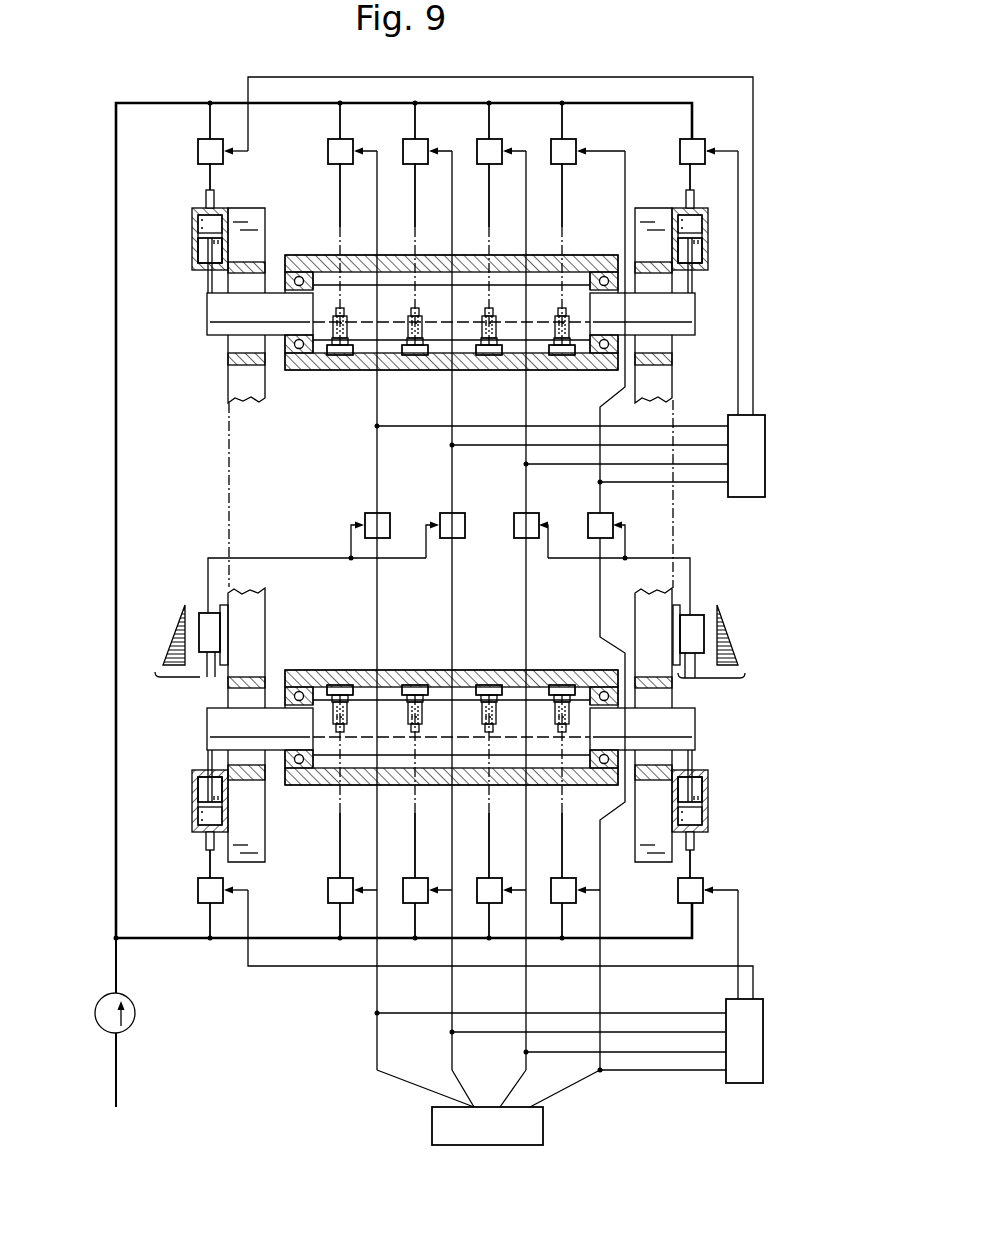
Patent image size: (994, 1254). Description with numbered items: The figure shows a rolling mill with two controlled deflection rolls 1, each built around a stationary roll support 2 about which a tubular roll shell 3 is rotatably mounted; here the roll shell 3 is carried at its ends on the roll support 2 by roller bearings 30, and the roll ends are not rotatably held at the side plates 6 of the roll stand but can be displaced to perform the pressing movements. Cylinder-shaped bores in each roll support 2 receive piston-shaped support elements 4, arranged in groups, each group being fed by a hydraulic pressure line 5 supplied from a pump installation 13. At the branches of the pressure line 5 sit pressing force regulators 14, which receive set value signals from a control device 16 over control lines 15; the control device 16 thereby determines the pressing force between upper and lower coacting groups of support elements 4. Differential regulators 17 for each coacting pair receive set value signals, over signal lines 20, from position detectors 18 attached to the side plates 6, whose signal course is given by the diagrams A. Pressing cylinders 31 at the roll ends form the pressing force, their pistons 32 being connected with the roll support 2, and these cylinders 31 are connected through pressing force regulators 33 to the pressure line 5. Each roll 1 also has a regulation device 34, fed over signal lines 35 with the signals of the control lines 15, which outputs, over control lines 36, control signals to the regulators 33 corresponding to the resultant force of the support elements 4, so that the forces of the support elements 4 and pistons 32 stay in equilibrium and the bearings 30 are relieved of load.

The controlled deflection roll 1 is at (496, 378).
The roll support 2 is at (538, 322).
The roll shell 3 is at (390, 368).
The support element 4 is at (340, 356).
The hydraulic pressure line 5 is at (604, 104).
The side plate 6 is at (250, 210).
The pump installation 13 is at (135, 1016).
The pressing force regulator 14 is at (328, 152).
The control line 15 is at (600, 993).
The control device 16 is at (545, 1128).
The differential regulator 17 is at (384, 518).
The position detector 18 is at (198, 609).
The signal line 20 is at (283, 558).
The roller bearing 30 is at (297, 272).
The pressing cylinder 31 is at (198, 226).
The piston 32 is at (203, 250).
The pressing force regulator 33 is at (198, 152).
The regulation device 34 is at (742, 496).
The signal line 35 is at (687, 427).
The control line 36 is at (283, 77).